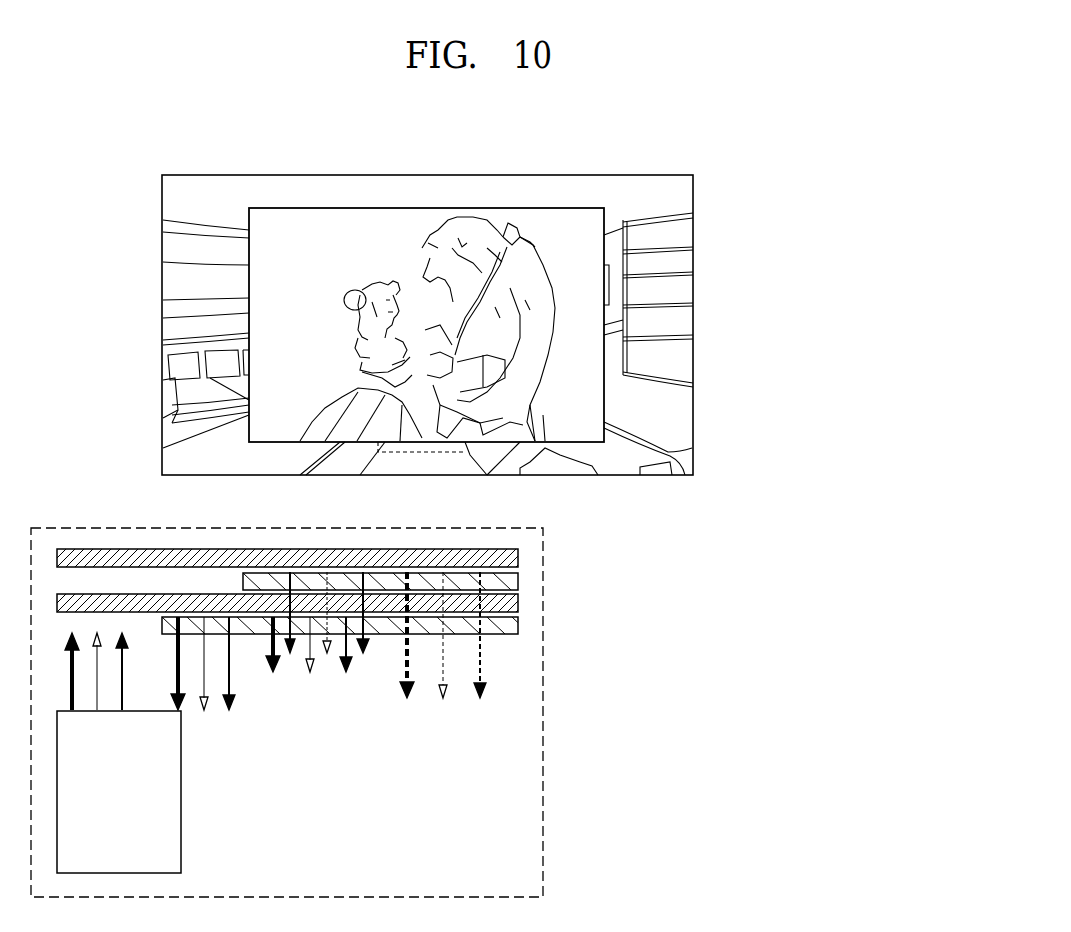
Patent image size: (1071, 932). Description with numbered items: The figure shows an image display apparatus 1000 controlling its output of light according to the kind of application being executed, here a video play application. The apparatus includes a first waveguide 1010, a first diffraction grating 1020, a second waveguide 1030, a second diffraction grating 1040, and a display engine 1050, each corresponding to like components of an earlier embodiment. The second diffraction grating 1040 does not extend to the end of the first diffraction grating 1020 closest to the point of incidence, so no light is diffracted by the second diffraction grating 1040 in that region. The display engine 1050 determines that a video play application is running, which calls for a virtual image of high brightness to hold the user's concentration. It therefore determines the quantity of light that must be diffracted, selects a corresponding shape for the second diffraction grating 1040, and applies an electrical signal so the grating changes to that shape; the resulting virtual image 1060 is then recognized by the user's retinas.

The image display apparatus 1000 is at (475, 528).
The first waveguide 1010 is at (518, 603).
The first diffraction grating 1020 is at (518, 626).
The second waveguide 1030 is at (518, 558).
The second diffraction grating 1040 is at (518, 581).
The display engine 1050 is at (119, 792).
The virtual image 1060 is at (428, 208).